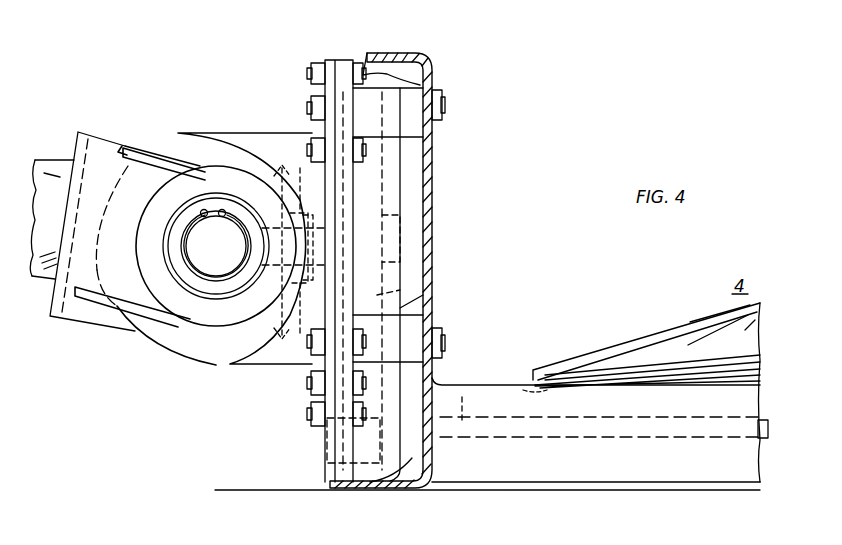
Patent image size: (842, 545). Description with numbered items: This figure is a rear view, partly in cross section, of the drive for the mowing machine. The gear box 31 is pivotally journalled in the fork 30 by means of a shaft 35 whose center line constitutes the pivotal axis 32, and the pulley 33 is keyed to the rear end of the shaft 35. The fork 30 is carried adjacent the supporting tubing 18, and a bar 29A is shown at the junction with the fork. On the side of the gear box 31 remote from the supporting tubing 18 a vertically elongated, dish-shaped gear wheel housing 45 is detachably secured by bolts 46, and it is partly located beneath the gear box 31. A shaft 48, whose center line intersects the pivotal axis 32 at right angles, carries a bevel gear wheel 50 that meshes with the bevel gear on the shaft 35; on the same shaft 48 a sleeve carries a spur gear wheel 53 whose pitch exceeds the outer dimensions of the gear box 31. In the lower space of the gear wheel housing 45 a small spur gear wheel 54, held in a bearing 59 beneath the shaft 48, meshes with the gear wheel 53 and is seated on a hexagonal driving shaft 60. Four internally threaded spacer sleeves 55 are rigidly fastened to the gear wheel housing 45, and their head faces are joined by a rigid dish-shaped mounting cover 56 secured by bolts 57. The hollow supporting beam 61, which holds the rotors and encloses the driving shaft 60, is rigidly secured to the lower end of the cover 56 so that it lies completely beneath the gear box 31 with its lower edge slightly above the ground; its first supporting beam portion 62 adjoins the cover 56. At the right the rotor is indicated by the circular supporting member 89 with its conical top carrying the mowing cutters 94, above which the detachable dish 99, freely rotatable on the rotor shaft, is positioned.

The supporting tubing 18 is at (56, 159).
The upper mounting bar 29A is at (148, 147).
The fork 30 is at (72, 320).
The gear box 31 is at (216, 366).
The pivotal axis 32 is at (216, 246).
The pulley 33 is at (138, 243).
The shaft 35 is at (193, 228).
The gear wheel housing 45 is at (428, 193).
The bolts 46 is at (312, 60).
The shaft 48 is at (407, 242).
The bevel gear wheel 50 is at (287, 337).
The spur gear wheel 53 is at (400, 290).
The spur gear wheel 54 is at (312, 452).
The spacer sleeves 55 is at (410, 127).
The mounting cover 56 is at (427, 302).
The bolts 57 is at (443, 102).
The bearing 59 is at (414, 458).
The hexagonal driving shaft 60 is at (466, 394).
The supporting beam 61 is at (566, 490).
The supporting beam portion 62 is at (720, 485).
The supporting member 89 is at (694, 384).
The mowing cutters 94 is at (576, 362).
The detachable dish 99 is at (692, 312).